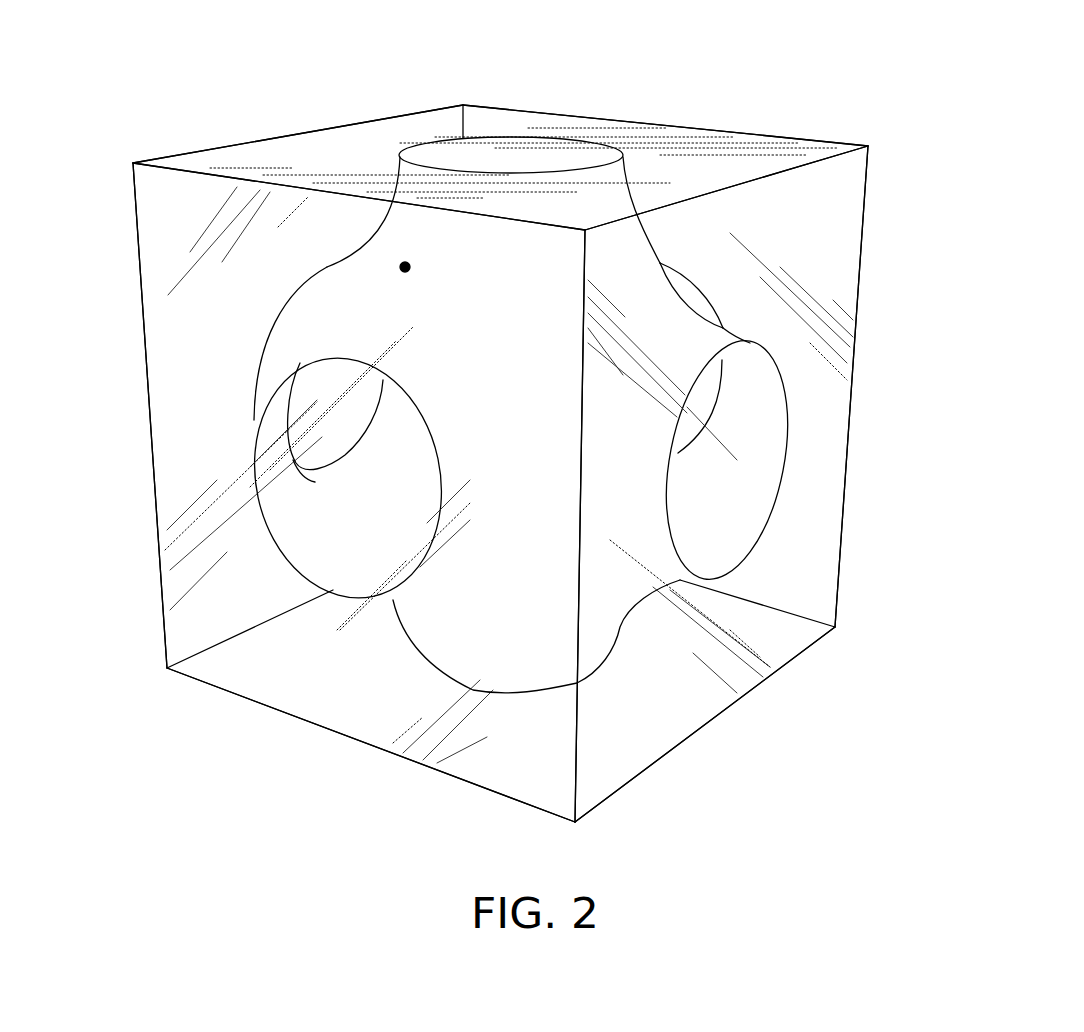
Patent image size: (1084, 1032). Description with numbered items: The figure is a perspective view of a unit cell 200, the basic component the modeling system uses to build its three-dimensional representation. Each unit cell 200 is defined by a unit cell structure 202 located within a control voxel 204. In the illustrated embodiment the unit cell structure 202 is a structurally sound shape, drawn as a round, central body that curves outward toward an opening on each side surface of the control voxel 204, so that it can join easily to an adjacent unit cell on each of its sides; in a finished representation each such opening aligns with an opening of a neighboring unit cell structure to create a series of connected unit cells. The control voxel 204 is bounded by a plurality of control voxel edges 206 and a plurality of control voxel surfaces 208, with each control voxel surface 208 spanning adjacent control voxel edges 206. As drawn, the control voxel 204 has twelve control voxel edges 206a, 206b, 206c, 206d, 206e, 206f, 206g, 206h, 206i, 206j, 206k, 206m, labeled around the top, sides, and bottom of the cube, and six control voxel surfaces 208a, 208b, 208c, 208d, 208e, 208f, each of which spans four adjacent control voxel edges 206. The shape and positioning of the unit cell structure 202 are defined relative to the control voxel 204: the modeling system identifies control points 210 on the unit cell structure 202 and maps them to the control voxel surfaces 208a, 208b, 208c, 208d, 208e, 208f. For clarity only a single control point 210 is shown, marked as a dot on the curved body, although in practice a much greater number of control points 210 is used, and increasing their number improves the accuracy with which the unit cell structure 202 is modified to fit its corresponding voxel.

The unit cell 200 is at (857, 82).
The unit cell structure 202 is at (645, 336).
The control voxel 204 is at (257, 157).
The control voxel edges 206 is at (140, 288).
The control voxel edge 206a is at (648, 122).
The control voxel edge 206b is at (773, 173).
The control voxel edge 206c is at (333, 192).
The control voxel edge 206d is at (367, 118).
The control voxel edge 206e is at (153, 523).
The control voxel edge 206f is at (467, 122).
The control voxel edge 206g is at (843, 405).
The control voxel edge 206h is at (577, 750).
The control voxel edge 206i is at (790, 660).
The control voxel edge 206j is at (793, 613).
The control voxel edge 206k is at (230, 640).
The control voxel edge 206m is at (253, 702).
The control voxel surfaces 208 is at (210, 383).
The control voxel surface 208a is at (762, 150).
The control voxel surface 208b is at (473, 770).
The control voxel surface 208c is at (670, 712).
The control voxel surface 208d is at (177, 473).
The control voxel surface 208e is at (820, 488).
The control voxel surface 208f is at (233, 583).
The control point 210 is at (405, 267).